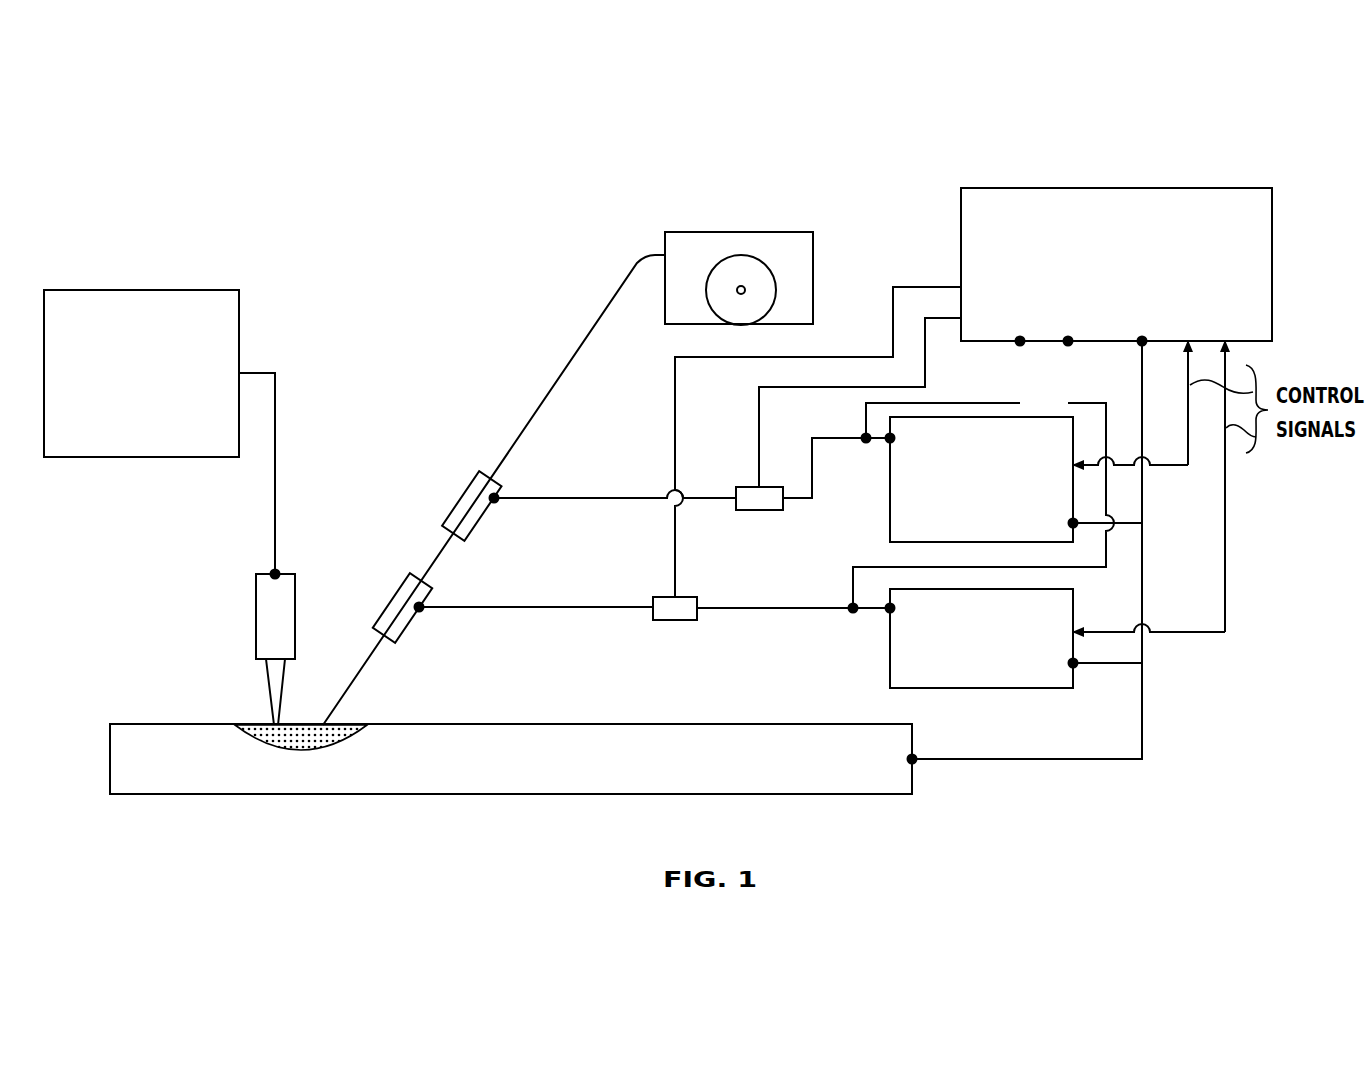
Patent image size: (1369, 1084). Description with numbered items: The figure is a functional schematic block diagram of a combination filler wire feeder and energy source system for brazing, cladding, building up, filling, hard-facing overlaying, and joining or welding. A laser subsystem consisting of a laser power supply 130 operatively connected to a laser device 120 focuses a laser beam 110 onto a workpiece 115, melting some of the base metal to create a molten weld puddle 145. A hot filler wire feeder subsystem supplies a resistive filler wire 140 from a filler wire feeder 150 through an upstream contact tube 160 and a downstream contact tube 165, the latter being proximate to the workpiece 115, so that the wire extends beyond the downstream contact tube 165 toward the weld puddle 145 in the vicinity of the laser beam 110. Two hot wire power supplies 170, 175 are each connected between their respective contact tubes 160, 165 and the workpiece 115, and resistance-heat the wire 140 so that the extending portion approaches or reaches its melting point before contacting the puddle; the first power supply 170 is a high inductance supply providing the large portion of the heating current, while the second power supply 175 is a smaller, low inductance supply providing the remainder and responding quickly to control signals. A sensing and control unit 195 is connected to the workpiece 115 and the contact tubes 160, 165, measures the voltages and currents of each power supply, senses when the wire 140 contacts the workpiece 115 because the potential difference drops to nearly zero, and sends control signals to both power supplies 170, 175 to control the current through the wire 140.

The laser beam 110 is at (270, 690).
The workpiece 115 is at (507, 794).
The laser device 120 is at (295, 590).
The laser power supply 130 is at (168, 290).
The resistive filler wire 140 is at (370, 660).
The weld puddle 145 is at (350, 739).
The filler wire feeder 150 is at (757, 232).
The upstream contact tube 160 is at (462, 497).
The downstream contact tube 165 is at (425, 586).
The hot wire power supply 170 is at (890, 510).
The hot wire power supply 175 is at (993, 688).
The sensing and control unit 195 is at (1197, 188).